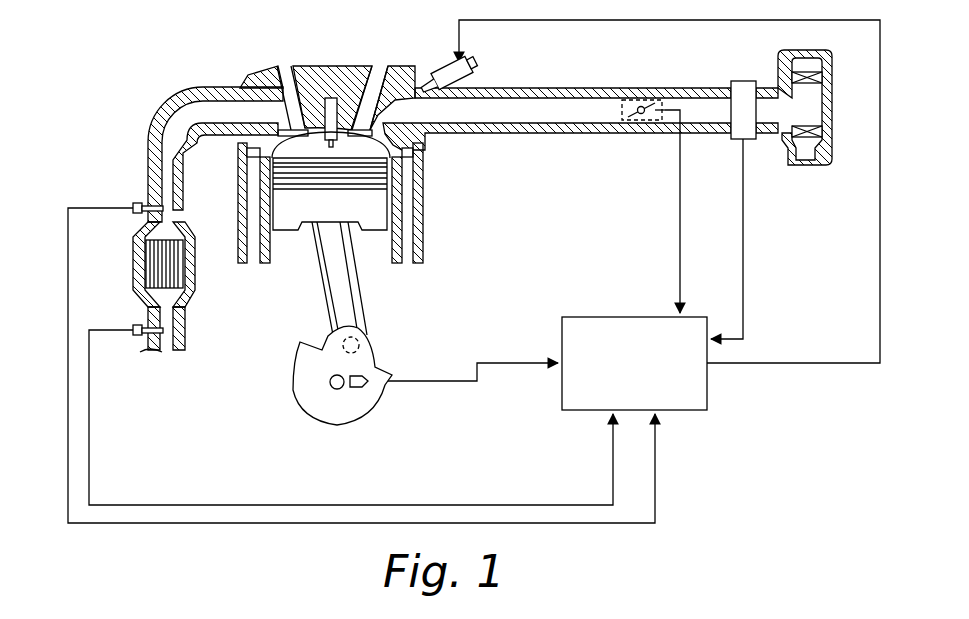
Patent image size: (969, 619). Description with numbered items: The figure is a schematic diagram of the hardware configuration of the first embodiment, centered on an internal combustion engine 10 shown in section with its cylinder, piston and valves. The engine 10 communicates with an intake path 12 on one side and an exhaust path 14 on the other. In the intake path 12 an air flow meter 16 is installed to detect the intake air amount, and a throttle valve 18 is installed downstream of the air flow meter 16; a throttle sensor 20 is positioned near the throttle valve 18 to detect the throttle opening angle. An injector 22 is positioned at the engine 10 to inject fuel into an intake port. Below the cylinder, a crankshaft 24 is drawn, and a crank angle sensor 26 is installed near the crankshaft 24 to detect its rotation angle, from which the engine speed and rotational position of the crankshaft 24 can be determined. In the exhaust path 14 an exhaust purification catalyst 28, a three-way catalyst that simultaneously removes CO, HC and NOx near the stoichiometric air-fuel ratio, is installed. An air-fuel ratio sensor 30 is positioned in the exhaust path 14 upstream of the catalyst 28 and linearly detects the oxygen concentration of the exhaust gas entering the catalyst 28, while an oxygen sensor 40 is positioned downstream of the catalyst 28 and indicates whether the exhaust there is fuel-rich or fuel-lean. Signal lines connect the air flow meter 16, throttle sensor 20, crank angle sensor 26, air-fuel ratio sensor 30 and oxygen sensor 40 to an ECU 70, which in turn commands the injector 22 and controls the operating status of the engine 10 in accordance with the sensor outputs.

The internal combustion engine 10 is at (440, 242).
The intake path 12 is at (571, 85).
The exhaust path 14 is at (147, 109).
The air flow meter 16 is at (743, 85).
The throttle valve 18 is at (641, 106).
The throttle sensor 20 is at (659, 125).
The injector 22 is at (472, 78).
The crankshaft 24 is at (337, 390).
The crank angle sensor 26 is at (362, 390).
The exhaust purification catalyst 28 is at (140, 262).
The air-fuel ratio sensor 30 is at (140, 204).
The oxygen sensor 40 is at (138, 338).
The ECU 70 is at (572, 412).